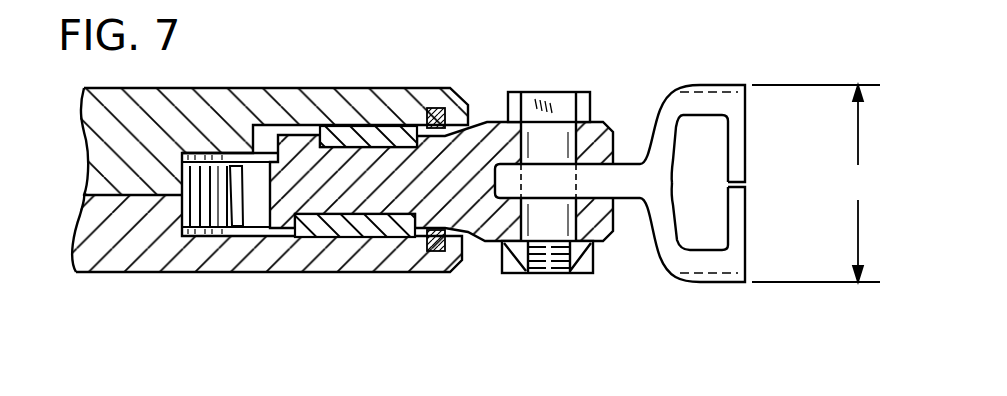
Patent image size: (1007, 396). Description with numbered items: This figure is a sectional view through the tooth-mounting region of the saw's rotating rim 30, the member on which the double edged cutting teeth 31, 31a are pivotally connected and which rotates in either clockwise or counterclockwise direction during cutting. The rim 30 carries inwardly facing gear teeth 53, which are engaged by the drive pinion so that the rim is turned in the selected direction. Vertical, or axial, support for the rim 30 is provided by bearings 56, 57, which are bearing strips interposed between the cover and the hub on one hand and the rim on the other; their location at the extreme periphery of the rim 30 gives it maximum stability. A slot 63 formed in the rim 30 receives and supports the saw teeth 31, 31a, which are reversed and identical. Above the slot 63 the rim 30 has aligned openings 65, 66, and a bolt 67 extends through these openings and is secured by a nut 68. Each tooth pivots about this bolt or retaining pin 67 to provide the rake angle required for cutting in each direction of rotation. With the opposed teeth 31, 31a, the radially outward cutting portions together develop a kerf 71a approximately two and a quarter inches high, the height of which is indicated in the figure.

The rim 30 is at (298, 140).
The cutting tooth 31 is at (738, 232).
The cutting tooth 31a is at (745, 118).
The inwardly facing gear teeth 53 is at (239, 218).
The bearing 56 is at (374, 236).
The bearing 57 is at (367, 130).
The slot 63 is at (507, 200).
The opening 65 is at (561, 121).
The opening 66 is at (562, 273).
The bolt 67 is at (549, 92).
The nut 68 is at (509, 274).
The kerf 71a is at (821, 183).